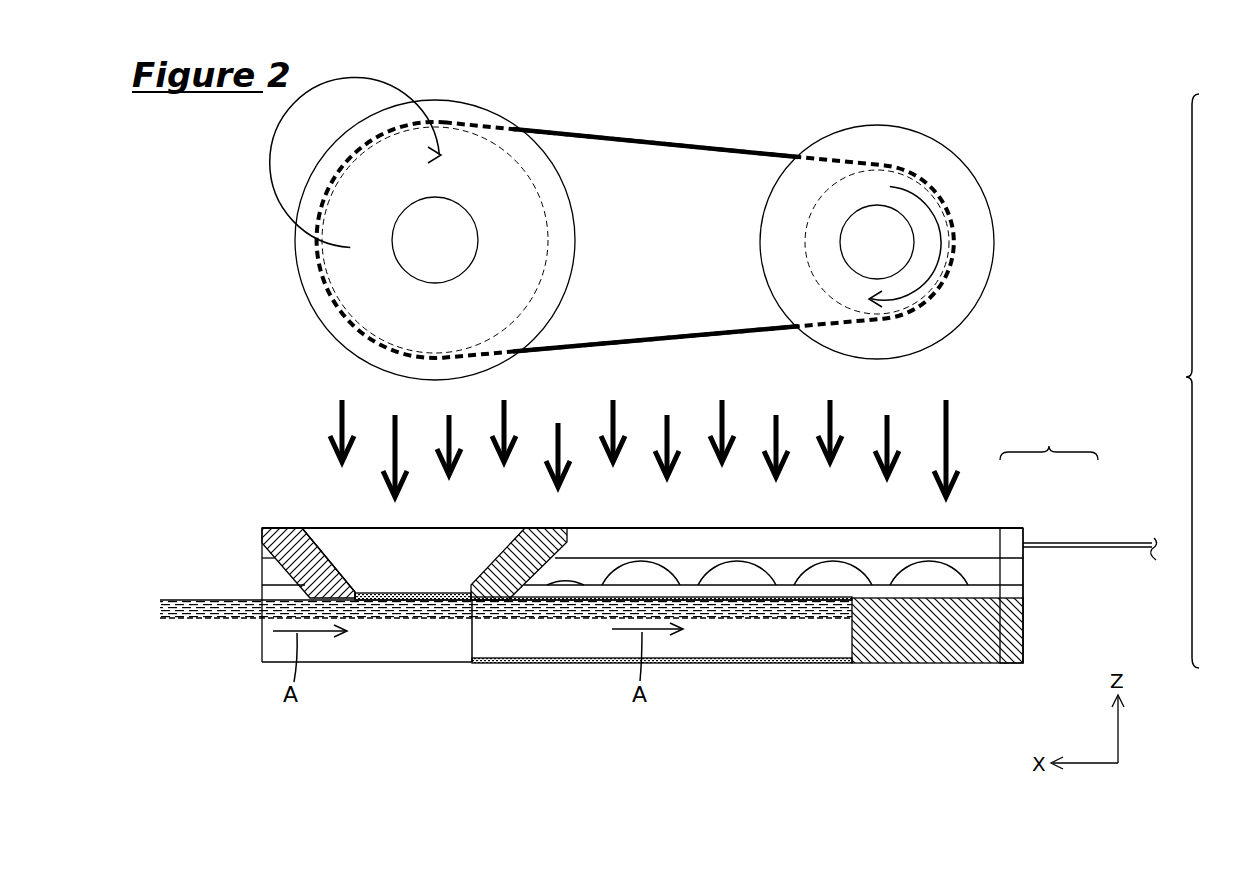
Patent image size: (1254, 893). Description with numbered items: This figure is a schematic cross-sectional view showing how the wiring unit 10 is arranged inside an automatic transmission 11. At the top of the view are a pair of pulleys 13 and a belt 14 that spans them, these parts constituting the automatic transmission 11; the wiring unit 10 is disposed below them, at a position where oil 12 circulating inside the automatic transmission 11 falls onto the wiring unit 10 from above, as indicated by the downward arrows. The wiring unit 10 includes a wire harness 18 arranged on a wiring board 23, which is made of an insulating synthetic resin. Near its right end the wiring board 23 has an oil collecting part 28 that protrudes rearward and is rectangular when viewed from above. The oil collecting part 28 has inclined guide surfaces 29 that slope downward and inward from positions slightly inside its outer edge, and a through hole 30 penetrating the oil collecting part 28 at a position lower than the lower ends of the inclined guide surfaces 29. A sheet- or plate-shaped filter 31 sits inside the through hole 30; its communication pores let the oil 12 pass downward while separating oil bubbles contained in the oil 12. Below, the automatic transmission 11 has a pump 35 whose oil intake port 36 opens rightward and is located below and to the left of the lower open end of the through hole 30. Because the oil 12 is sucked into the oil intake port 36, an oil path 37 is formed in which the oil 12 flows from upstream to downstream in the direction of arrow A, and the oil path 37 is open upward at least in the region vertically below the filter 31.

The wiring unit 10 is at (1049, 439).
The automatic transmission 11 is at (1209, 381).
The oil 12 is at (214, 608).
The pulleys 13 is at (435, 100).
The belt 14 is at (655, 142).
The wire harness 18 is at (1093, 541).
The wiring board 23 is at (1000, 537).
The oil collecting part 28 is at (276, 528).
The inclined guide surfaces 29 is at (322, 547).
The through hole 30 is at (362, 588).
The filter 31 is at (413, 593).
The pump 35 is at (913, 652).
The oil intake port 36 is at (467, 633).
The oil path 37 is at (527, 656).